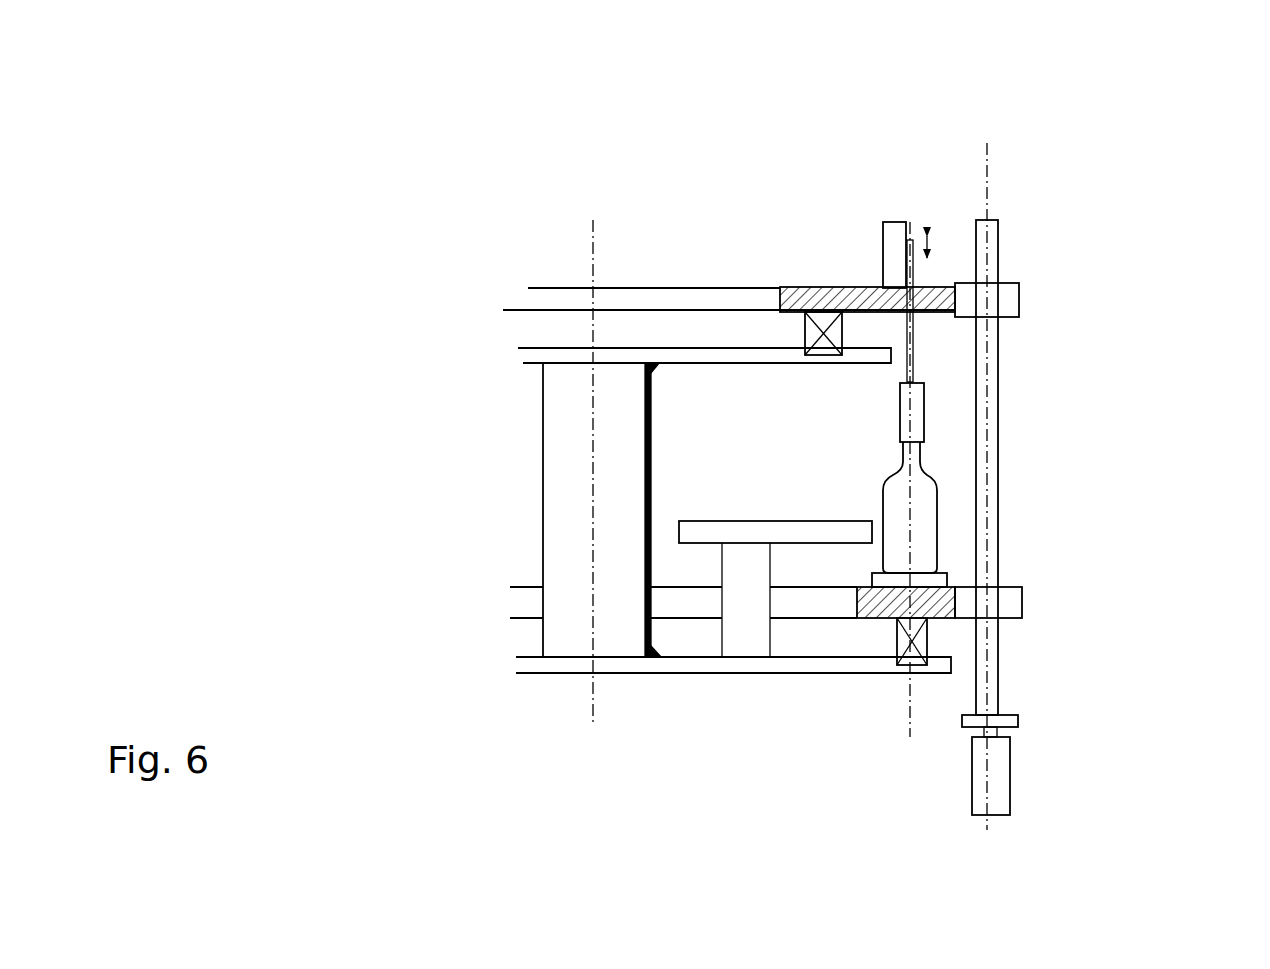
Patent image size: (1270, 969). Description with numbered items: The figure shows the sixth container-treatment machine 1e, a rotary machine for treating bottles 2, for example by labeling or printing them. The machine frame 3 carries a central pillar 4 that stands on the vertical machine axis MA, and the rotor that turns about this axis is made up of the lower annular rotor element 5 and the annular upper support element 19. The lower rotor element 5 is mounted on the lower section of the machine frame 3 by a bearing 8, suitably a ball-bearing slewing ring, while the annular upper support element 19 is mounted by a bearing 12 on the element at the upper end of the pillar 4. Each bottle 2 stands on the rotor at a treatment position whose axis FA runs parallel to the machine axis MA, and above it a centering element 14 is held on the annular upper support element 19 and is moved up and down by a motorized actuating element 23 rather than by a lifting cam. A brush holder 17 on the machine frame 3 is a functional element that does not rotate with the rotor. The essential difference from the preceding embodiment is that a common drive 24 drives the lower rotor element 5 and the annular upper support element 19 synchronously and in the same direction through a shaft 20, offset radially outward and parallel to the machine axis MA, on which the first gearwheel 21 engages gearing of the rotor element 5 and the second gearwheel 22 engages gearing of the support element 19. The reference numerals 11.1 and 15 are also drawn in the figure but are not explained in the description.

The sixth container-treatment machine 1e is at (350, 277).
The vertical machine axis MA is at (588, 230).
The axis of the bottle plate FA is at (913, 223).
The upper carrier 11.1 is at (691, 358).
The bearing 12 is at (793, 290).
The annular upper support element 19 is at (848, 290).
The motorized actuating element 23 is at (895, 233).
The shaft 20 is at (995, 242).
The second gearwheel 22 is at (1007, 300).
The centering element 14 is at (953, 402).
The lifting device 15 is at (1030, 493).
The bottle 2 is at (927, 528).
The lower annular rotor element 5 is at (865, 615).
The first gearwheel 21 is at (1007, 612).
The bearing 8 is at (920, 635).
The common drive 24 is at (998, 768).
The central pillar 4 is at (567, 507).
The brush holder 17 is at (770, 530).
The machine frame 3 is at (635, 692).